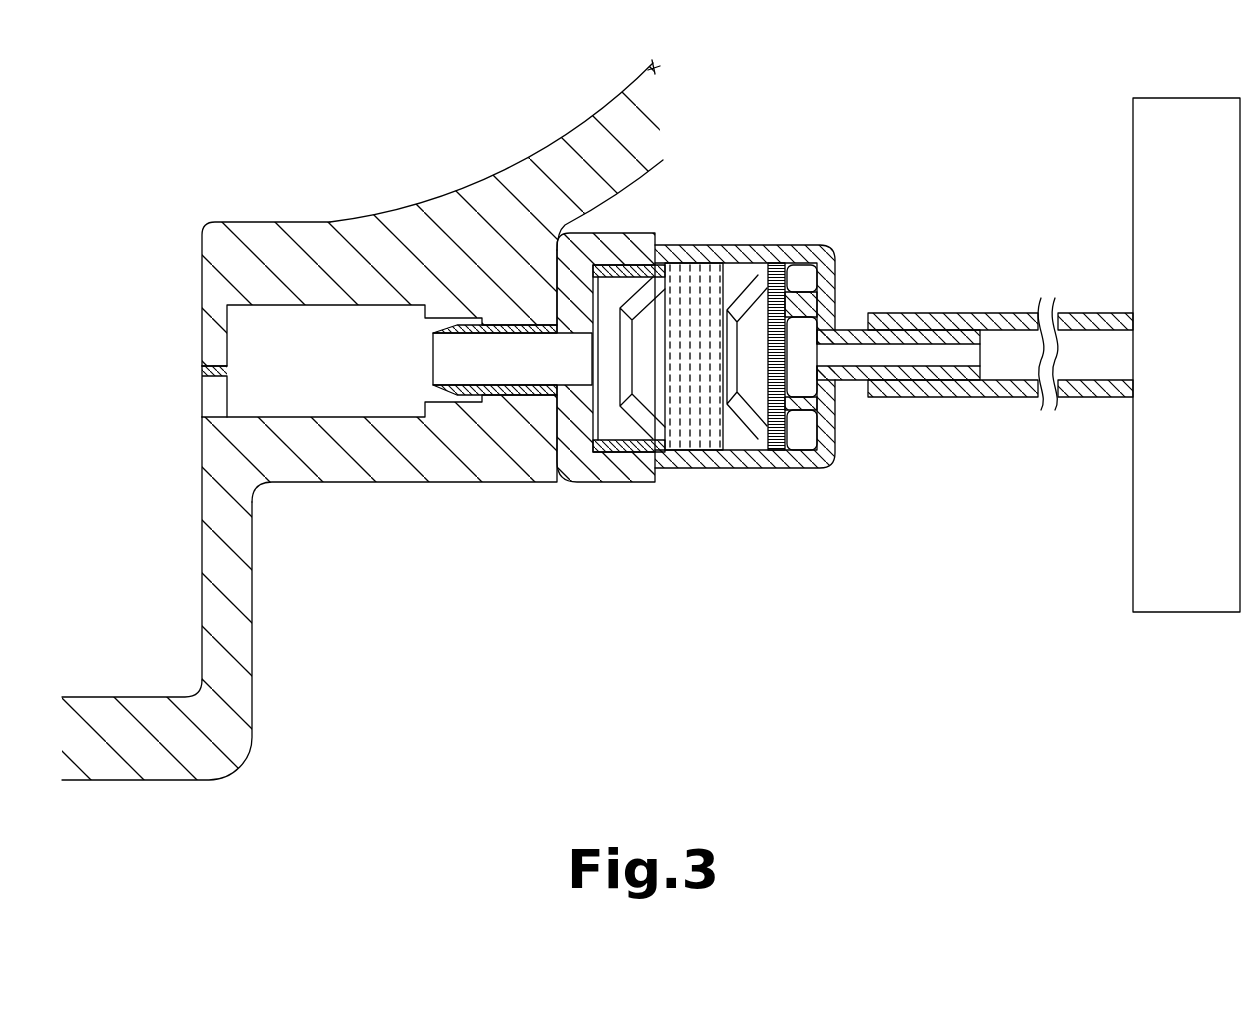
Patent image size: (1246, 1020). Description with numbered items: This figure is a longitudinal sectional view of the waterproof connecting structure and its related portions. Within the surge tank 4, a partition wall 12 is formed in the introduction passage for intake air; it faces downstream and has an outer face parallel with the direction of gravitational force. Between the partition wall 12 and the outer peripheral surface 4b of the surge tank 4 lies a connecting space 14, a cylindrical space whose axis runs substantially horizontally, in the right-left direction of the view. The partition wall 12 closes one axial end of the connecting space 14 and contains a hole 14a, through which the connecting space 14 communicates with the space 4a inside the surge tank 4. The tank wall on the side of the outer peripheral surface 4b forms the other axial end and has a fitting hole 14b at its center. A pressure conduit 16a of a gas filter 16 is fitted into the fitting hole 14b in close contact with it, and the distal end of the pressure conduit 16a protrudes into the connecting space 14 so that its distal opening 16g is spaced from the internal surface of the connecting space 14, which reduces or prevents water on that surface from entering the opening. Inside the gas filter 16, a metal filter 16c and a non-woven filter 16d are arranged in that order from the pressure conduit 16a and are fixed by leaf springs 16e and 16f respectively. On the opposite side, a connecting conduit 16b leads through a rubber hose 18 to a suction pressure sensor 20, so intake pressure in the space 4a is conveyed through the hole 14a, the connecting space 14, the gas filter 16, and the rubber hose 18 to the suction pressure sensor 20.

The surge tank 4 is at (652, 138).
The space 4a is at (190, 606).
The outer peripheral surface 4b is at (254, 644).
The partition wall 12 is at (208, 340).
The connecting space 14 is at (278, 335).
The hole 14a is at (208, 393).
The fitting hole 14b is at (527, 398).
The gas filter 16 is at (765, 205).
The pressure conduit 16a is at (500, 305).
The connecting conduit 16b is at (859, 328).
The metal filter 16c is at (690, 450).
The non-woven filter 16d is at (777, 450).
The leaf spring 16e is at (620, 448).
The leaf spring 16f is at (771, 447).
The distal opening 16g is at (430, 357).
The rubber hose 18 is at (1003, 313).
The suction pressure sensor 20 is at (1193, 96).